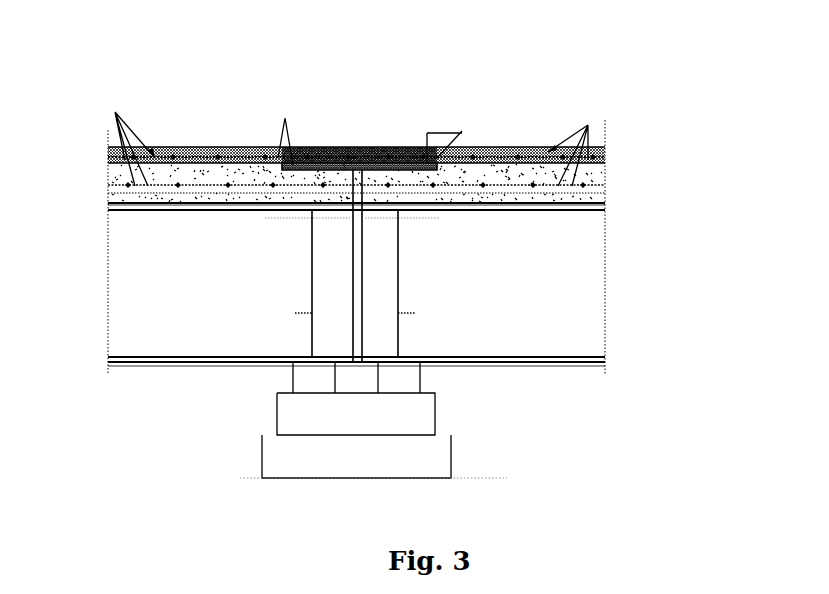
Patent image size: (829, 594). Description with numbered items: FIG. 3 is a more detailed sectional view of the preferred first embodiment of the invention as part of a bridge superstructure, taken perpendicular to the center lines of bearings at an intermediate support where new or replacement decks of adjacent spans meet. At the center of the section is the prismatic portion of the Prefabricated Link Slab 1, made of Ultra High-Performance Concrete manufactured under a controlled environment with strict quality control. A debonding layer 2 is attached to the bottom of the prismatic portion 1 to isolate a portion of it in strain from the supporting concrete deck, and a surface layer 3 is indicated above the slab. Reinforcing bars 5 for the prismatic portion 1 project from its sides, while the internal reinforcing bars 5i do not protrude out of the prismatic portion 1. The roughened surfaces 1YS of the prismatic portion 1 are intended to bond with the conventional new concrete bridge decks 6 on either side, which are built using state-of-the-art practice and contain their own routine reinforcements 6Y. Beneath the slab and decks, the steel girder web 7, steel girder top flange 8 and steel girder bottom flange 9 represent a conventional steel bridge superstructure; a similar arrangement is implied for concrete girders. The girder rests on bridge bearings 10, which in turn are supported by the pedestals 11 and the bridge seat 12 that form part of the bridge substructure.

The prismatic portion of the Prefabricated Link Slab 1 is at (357, 143).
The debonding layer 2 is at (340, 152).
The surface layer 3 is at (389, 142).
The reinforcing bars 5 is at (256, 151).
The internal reinforcing bars 5i is at (414, 156).
The roughened surfaces 1YS is at (445, 149).
The conventional new concrete bridge decks 6 is at (262, 190).
The reinforcements 6Y is at (115, 112).
The steel girder web 7 is at (163, 300).
The steel girder top flange 8 is at (617, 203).
The steel girder bottom flange 9 is at (619, 357).
The bridge bearings 10 is at (429, 379).
The pedestals 11 is at (444, 419).
The bridge seat 12 is at (460, 455).